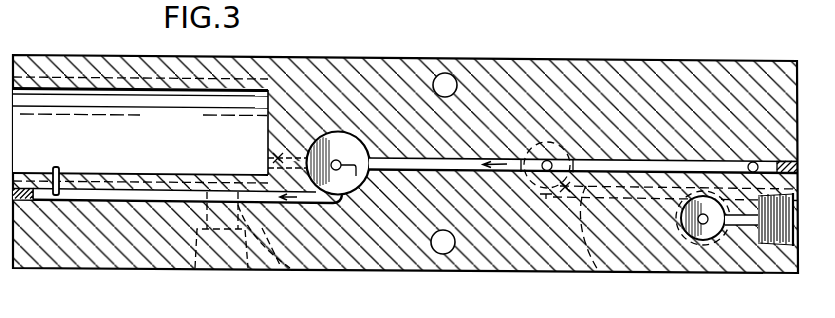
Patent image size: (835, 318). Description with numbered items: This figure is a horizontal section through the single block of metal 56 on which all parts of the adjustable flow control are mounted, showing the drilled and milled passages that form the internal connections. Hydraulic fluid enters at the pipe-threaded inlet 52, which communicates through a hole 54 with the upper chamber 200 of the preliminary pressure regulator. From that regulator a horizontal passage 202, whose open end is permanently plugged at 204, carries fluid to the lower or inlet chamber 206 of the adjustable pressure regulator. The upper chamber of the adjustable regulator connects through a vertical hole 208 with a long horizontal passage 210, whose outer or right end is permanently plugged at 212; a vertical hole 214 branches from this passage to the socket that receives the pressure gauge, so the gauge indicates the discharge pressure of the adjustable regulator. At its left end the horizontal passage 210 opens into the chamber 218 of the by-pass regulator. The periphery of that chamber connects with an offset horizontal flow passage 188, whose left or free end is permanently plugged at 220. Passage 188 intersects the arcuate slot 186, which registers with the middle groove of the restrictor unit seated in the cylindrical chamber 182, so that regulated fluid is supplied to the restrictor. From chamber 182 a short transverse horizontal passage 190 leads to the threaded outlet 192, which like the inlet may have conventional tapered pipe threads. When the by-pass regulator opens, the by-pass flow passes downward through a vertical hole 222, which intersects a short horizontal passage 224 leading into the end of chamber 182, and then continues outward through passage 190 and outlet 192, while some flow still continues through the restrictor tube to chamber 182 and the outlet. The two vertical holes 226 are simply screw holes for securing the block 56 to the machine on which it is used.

The inlet 52 is at (793, 244).
The hole 54 is at (742, 226).
The block 56 is at (613, 73).
The cylindrical chamber 182 is at (183, 127).
The slot 186 is at (58, 167).
The horizontal flow passage 188 is at (163, 199).
The flow passage 190 is at (278, 257).
The outlet 192 is at (213, 268).
The upper chamber 200 is at (693, 243).
The horizontal passage 202 is at (603, 267).
The plug 204 is at (791, 188).
The inlet chamber 206 is at (583, 164).
The vertical hole 208 is at (549, 161).
The horizontal passage 210 is at (457, 171).
The plug 212 is at (800, 166).
The vertical hole 214 is at (752, 161).
The chamber 218 is at (355, 155).
The plug 220 is at (13, 200).
The vertical hole 222 is at (338, 163).
The short horizontal passage 224 is at (283, 152).
The holes 226 is at (451, 74).